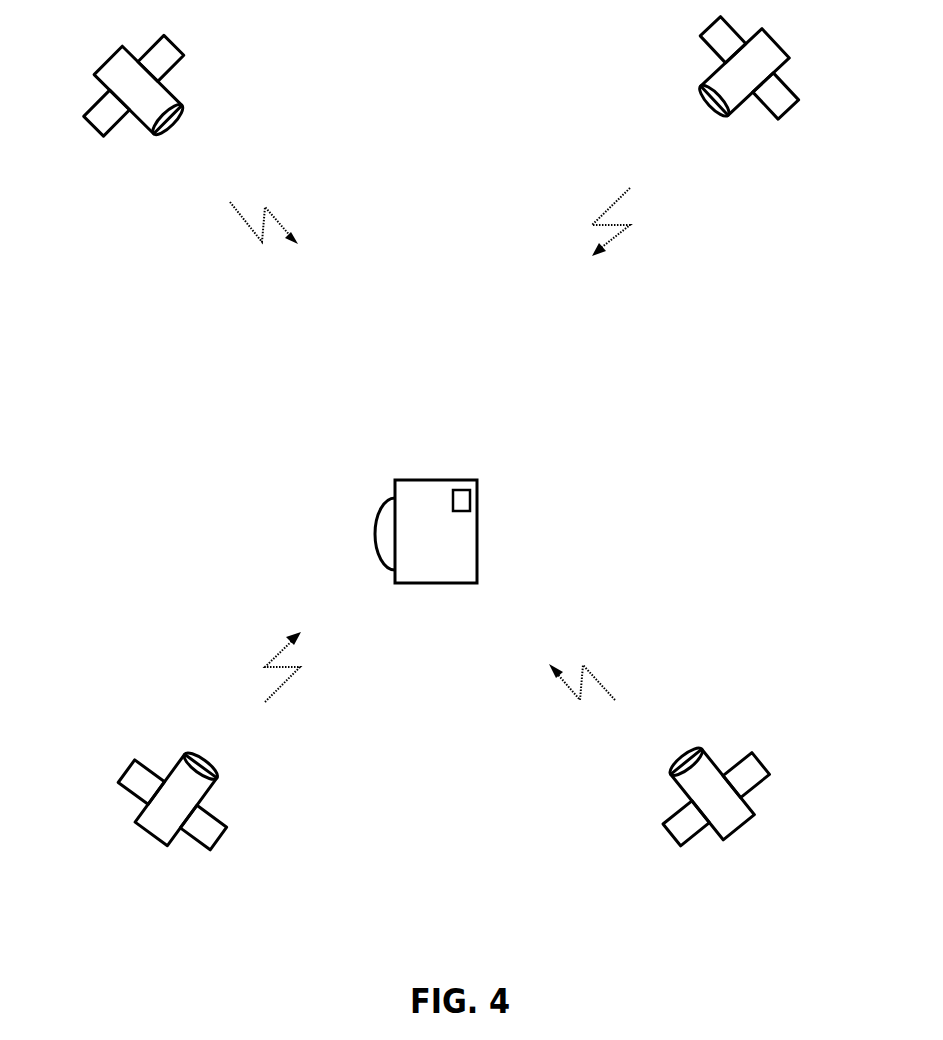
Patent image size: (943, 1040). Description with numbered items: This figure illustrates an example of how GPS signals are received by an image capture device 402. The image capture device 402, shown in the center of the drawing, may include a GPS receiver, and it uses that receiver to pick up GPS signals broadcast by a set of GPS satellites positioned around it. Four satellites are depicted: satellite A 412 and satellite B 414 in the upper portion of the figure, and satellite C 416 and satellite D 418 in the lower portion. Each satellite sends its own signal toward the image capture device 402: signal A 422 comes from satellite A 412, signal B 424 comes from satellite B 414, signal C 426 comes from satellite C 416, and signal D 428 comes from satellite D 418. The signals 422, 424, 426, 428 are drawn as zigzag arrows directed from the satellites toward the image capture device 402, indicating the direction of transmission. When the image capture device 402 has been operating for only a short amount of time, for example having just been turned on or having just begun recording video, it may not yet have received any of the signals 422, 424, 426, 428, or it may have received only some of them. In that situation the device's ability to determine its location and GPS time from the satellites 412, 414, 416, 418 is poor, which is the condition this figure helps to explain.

The image capture device 402 is at (437, 480).
The satellite A 412 is at (138, 97).
The satellite B 414 is at (748, 78).
The satellite C 416 is at (172, 810).
The satellite D 418 is at (713, 798).
The signal A 422 is at (313, 205).
The signal B 424 is at (556, 209).
The signal C 426 is at (202, 667).
The signal D 428 is at (653, 676).